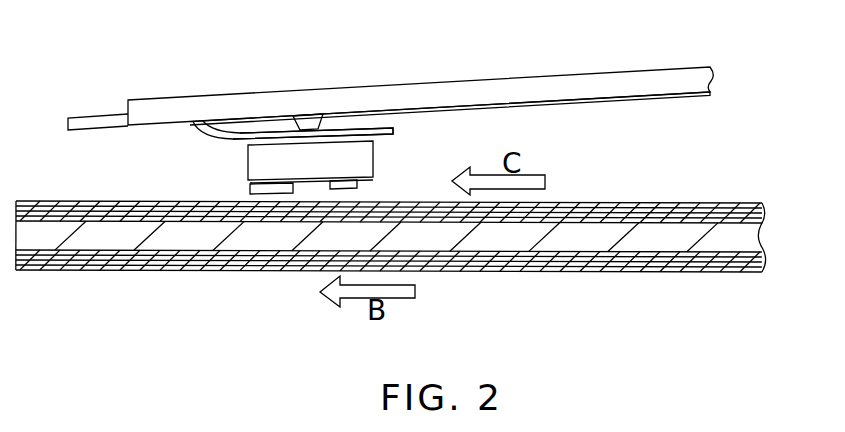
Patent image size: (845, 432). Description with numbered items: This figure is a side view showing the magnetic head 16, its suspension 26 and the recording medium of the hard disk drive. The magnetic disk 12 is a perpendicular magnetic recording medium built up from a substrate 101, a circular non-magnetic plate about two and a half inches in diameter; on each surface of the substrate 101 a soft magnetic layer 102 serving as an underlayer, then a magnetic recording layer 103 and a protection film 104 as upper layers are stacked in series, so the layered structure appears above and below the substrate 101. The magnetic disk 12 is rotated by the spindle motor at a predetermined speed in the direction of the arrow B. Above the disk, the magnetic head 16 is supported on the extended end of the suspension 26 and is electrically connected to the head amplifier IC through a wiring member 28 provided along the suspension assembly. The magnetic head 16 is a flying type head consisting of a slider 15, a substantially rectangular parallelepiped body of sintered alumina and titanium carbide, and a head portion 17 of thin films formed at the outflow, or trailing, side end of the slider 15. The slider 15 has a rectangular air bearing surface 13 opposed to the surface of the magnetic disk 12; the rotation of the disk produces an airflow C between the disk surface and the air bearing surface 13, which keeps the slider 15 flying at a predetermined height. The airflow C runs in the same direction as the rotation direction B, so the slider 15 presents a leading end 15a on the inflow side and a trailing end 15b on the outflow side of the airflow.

The magnetic disk 12 is at (723, 183).
The air bearing surface 13 is at (302, 199).
The slider 15 is at (283, 157).
The leading end 15a is at (385, 143).
The trailing end 15b is at (250, 188).
The magnetic head 16 is at (390, 159).
The head portion 17 is at (248, 162).
The suspension 26 is at (577, 84).
The wiring member 28 is at (608, 103).
The substrate 101 is at (632, 238).
The soft magnetic layer 102 is at (763, 228).
The magnetic recording layer 103 is at (685, 203).
The protection film 104 is at (758, 203).